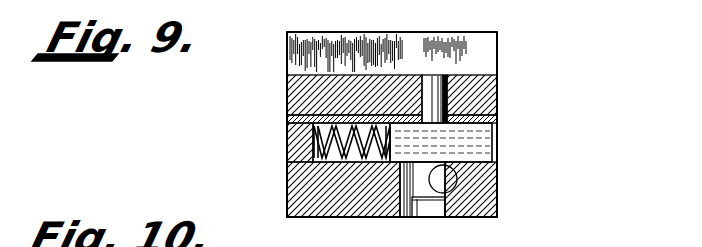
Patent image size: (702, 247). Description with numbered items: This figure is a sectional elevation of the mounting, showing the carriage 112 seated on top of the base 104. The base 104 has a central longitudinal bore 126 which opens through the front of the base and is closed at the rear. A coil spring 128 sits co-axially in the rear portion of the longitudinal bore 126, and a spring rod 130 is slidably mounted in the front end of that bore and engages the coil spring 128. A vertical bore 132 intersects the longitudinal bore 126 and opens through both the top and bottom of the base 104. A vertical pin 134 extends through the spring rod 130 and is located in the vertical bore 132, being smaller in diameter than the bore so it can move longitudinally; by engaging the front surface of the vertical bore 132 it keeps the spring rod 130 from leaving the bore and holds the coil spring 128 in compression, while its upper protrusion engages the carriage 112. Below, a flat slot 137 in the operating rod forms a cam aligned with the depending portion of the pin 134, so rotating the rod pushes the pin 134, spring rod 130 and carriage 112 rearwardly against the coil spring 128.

The carriage 112 is at (475, 95).
The base 104 is at (488, 182).
The vertical pin 134 is at (433, 77).
The central longitudinal bore 126 is at (343, 160).
The coil spring 128 is at (313, 135).
The spring rod 130 is at (487, 142).
The vertical bore 132 is at (403, 197).
The flat slot 137 is at (440, 190).